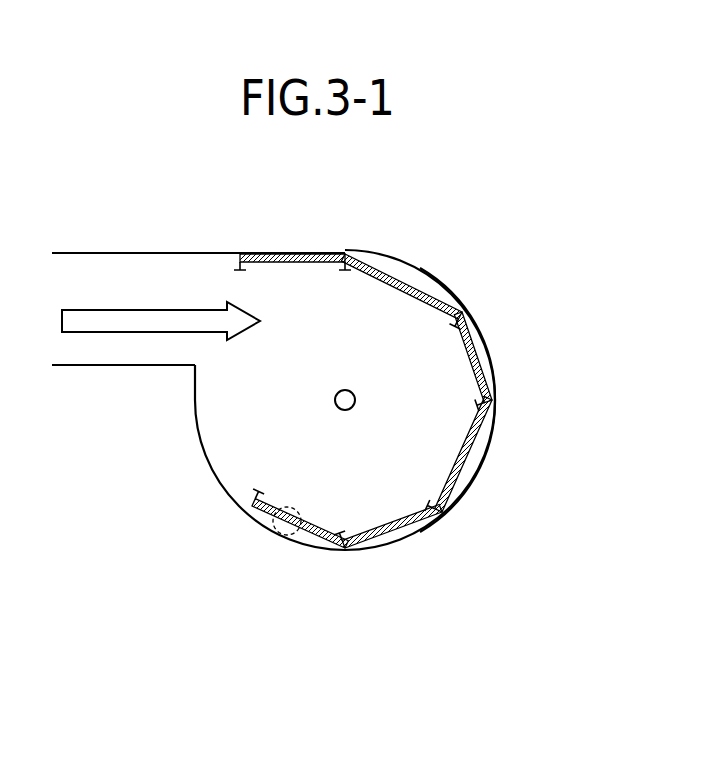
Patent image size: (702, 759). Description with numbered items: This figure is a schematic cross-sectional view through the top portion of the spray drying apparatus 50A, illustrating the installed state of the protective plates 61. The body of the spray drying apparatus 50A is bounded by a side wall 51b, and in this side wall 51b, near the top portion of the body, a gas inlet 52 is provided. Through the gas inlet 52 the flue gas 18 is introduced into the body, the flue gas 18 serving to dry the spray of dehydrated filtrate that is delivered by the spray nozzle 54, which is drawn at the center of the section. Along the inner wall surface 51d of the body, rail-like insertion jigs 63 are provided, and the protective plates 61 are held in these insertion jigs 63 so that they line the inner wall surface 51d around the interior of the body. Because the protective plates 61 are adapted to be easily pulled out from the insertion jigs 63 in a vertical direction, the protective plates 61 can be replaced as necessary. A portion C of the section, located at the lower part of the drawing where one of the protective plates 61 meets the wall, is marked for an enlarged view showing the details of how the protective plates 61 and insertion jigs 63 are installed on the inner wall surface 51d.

The flue gas 18 is at (93, 310).
The gas inlet 52 is at (143, 252).
The spray drying apparatus 50A is at (180, 456).
The inner wall surface 51d is at (478, 343).
The side wall 51b is at (482, 465).
The protective plates 61 is at (404, 280).
The insertion jigs 63 is at (462, 310).
The spray nozzle 54 is at (355, 398).
The portion C is at (276, 533).